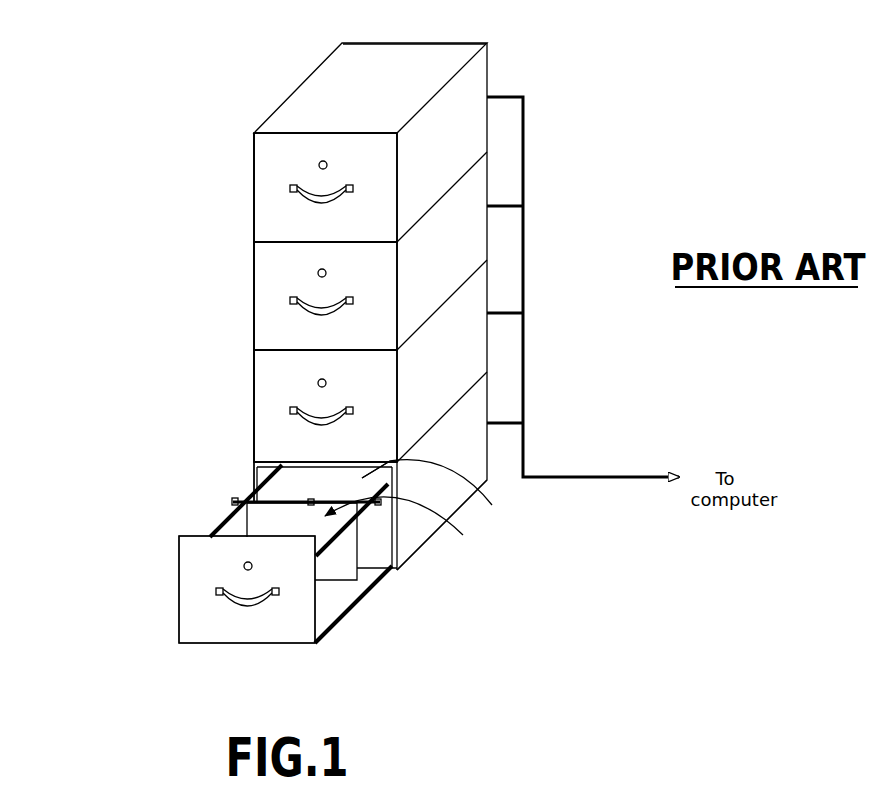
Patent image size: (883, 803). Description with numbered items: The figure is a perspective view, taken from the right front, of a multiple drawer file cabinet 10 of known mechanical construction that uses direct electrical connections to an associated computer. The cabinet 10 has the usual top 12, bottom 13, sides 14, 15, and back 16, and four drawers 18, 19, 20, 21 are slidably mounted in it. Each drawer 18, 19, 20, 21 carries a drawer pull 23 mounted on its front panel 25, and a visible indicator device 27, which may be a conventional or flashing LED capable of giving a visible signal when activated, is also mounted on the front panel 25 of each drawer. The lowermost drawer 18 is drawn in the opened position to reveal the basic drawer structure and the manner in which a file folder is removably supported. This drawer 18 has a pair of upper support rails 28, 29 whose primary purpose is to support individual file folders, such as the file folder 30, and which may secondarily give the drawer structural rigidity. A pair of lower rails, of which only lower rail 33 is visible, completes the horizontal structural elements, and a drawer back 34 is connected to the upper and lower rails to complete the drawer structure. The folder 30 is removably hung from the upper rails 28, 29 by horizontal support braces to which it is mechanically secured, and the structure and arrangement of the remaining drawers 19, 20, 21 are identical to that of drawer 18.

The multiple drawer file cabinet 10 is at (252, 162).
The top 12 is at (322, 107).
The bottom 13 is at (427, 542).
The side 14 is at (253, 218).
The side 15 is at (470, 88).
The back 16 is at (443, 43).
The lowermost drawer 18 is at (204, 544).
The drawer 19 is at (294, 431).
The drawer 20 is at (274, 262).
The drawer 21 is at (263, 144).
The drawer pull 23 is at (296, 195).
The front panel 25 is at (264, 140).
The visible indicator device 27 is at (320, 161).
The upper support rail 28 is at (220, 522).
The upper support rail 29 is at (330, 540).
The file folder 30 is at (406, 526).
The lower rail 33 is at (370, 588).
The back 34 is at (441, 492).